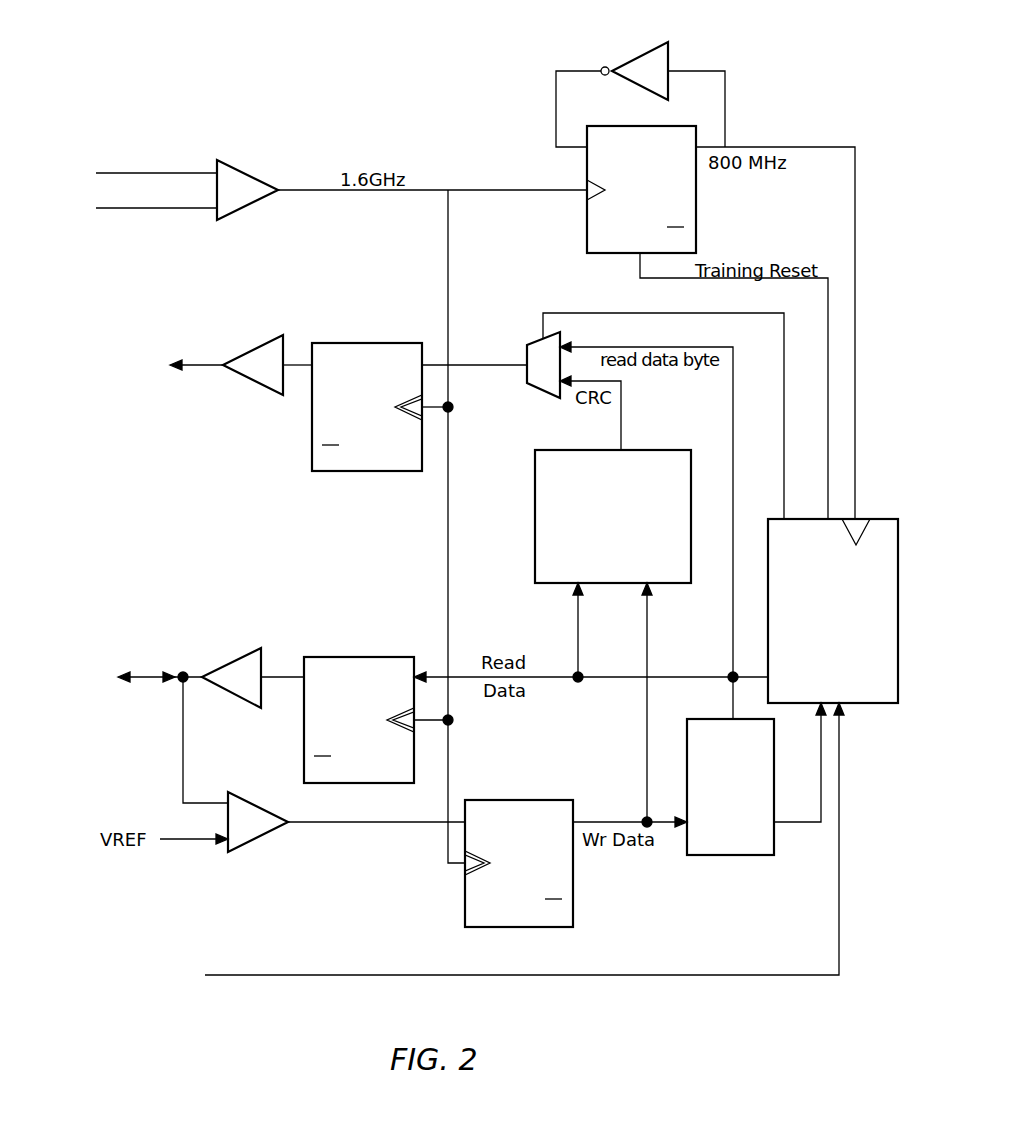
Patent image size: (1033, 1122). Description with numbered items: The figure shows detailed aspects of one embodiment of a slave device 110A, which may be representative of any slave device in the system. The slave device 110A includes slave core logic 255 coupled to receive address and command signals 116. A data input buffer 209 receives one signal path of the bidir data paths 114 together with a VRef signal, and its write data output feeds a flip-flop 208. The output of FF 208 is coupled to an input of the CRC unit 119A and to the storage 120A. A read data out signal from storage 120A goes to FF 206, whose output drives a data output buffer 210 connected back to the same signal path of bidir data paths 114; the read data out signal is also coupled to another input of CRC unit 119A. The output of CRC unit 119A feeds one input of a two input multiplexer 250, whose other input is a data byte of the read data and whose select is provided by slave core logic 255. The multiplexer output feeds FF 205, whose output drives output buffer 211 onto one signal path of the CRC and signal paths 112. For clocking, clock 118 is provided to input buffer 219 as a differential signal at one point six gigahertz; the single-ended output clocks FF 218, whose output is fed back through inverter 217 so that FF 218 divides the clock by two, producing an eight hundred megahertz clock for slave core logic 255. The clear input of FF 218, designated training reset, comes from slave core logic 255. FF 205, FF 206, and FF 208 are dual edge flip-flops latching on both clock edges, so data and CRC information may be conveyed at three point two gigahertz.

The slave device 110A is at (198, 50).
The clock 118 is at (156, 190).
The input buffer 219 is at (232, 165).
The inverter 217 is at (648, 50).
The flip-flop 218 is at (598, 253).
The two input multiplexer 250 is at (527, 345).
The CRC unit 119A is at (592, 542).
The flip-flop 205 is at (335, 471).
The output buffer 211 is at (270, 395).
The CRC and signal paths 112 is at (151, 365).
The flip-flop 206 is at (360, 657).
The data output buffer 210 is at (240, 655).
The bidir data paths 114 is at (102, 677).
The data input buffer 209 is at (228, 852).
The flip-flop 208 is at (513, 927).
The storage 120A is at (709, 814).
The slave core logic 255 is at (808, 608).
The address and command signals 116 is at (429, 844).